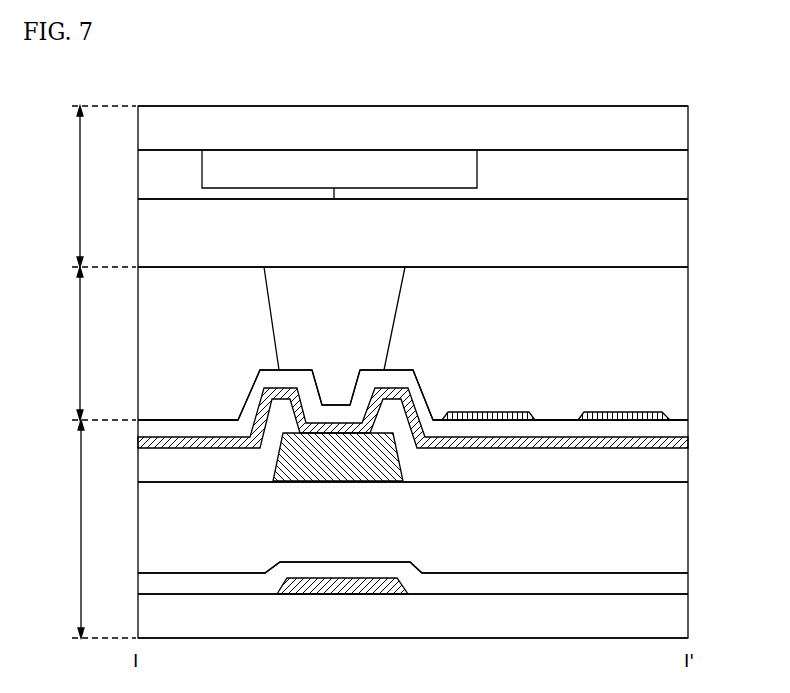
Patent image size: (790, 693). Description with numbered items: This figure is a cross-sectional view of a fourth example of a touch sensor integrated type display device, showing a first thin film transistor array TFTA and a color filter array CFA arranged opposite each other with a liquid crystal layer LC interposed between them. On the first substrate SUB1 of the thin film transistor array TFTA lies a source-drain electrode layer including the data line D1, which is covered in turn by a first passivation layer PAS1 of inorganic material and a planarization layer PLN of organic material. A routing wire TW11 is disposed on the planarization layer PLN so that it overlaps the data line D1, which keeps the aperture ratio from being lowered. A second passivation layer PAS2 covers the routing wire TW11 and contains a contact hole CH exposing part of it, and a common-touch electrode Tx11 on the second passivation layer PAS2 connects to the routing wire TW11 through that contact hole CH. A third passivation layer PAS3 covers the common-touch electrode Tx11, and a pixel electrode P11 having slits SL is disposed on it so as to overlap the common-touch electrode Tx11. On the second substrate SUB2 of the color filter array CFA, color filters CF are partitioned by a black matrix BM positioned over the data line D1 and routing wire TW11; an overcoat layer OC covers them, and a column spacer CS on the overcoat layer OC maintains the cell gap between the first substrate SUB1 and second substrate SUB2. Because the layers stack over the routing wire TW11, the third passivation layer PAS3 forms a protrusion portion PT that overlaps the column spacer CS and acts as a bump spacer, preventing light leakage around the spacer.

The color filter array CFA is at (61, 186).
The liquid crystal layer LC is at (162, 292).
The first thin film transistor array TFTA is at (59, 529).
The second substrate SUB2 is at (660, 124).
The color filters CF is at (660, 173).
The black matrix BM is at (435, 159).
The overcoat layer OC is at (660, 230).
The column spacer CS is at (284, 322).
The protrusion portion PT is at (400, 417).
The contact hole CH is at (383, 376).
The common-touch electrode Tx11 is at (671, 444).
The third passivation layer PAS3 is at (661, 431).
The routing wire TW11 is at (287, 463).
The pixel electrode P11 is at (497, 417).
The slit SL is at (555, 418).
The second passivation layer PAS2 is at (673, 470).
The planarization layer PLN is at (663, 532).
The first passivation layer PAS1 is at (663, 580).
The data line D1 is at (329, 596).
The first substrate SUB1 is at (663, 618).